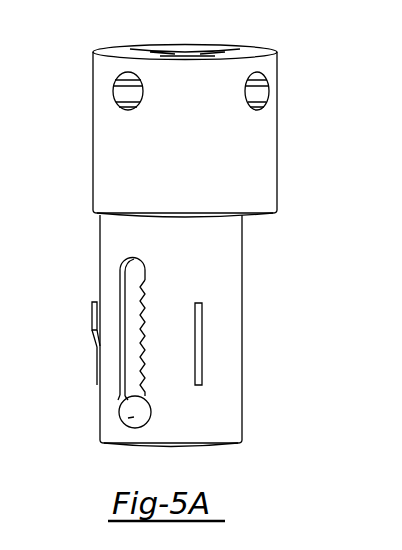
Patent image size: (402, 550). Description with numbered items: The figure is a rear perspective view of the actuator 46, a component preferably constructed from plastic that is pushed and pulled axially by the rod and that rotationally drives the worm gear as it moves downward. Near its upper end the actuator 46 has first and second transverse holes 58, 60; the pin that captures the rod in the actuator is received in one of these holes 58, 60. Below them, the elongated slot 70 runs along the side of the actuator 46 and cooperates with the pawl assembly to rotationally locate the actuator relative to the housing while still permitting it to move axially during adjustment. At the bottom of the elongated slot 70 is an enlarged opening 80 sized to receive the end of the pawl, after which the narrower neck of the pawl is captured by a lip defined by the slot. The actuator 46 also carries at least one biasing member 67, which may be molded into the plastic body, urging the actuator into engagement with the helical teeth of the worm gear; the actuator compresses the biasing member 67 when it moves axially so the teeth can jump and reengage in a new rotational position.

The actuator 46 is at (253, 148).
The first transverse hole 58 is at (122, 90).
The second transverse hole 60 is at (262, 92).
The biasing member 67 is at (92, 316).
The elongated slot 70 is at (124, 255).
The enlarged opening 80 is at (132, 417).